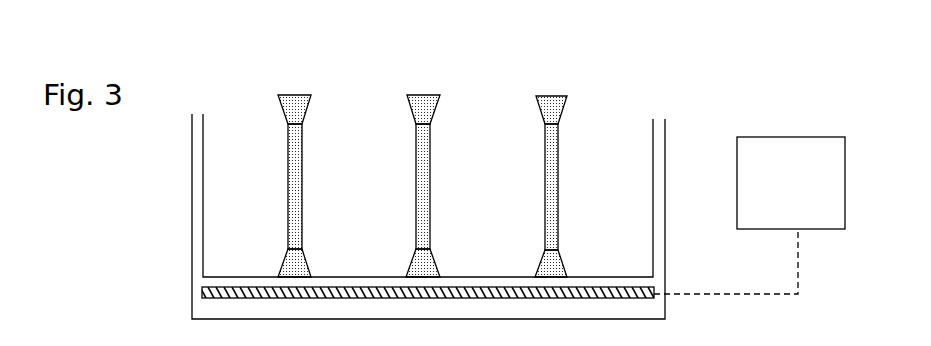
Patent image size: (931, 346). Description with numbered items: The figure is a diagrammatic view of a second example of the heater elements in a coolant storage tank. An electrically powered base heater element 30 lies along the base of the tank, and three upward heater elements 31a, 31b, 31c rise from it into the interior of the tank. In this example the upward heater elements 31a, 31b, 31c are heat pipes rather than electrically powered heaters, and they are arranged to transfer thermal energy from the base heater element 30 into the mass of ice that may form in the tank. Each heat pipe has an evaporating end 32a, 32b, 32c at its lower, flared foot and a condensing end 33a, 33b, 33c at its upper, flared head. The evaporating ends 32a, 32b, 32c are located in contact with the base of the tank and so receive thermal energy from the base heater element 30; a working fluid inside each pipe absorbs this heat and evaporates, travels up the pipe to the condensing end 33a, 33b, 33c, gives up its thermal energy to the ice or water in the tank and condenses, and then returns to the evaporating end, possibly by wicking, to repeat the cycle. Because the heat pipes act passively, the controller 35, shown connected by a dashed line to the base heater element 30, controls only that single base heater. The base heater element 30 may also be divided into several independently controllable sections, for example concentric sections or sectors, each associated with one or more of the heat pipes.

The base heater element 30 is at (202, 293).
The upward heater element 31a is at (289, 184).
The upward heater element 31b is at (421, 181).
The upward heater element 31c is at (548, 195).
The evaporating end 32a is at (291, 263).
The evaporating end 32b is at (419, 263).
The evaporating end 32c is at (550, 270).
The condensing end 33a is at (298, 103).
The condensing end 33b is at (418, 102).
The condensing end 33c is at (553, 103).
The controller 35 is at (810, 199).